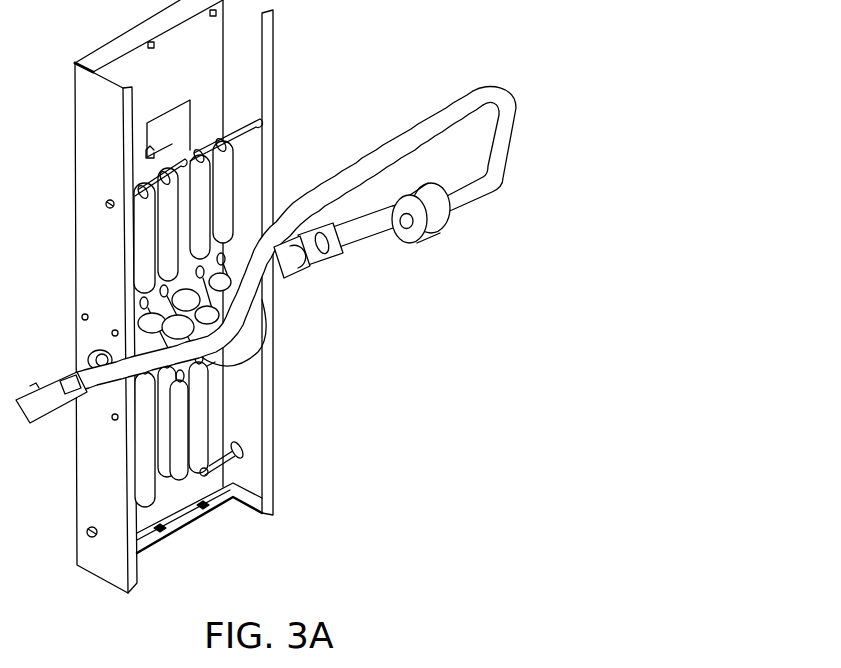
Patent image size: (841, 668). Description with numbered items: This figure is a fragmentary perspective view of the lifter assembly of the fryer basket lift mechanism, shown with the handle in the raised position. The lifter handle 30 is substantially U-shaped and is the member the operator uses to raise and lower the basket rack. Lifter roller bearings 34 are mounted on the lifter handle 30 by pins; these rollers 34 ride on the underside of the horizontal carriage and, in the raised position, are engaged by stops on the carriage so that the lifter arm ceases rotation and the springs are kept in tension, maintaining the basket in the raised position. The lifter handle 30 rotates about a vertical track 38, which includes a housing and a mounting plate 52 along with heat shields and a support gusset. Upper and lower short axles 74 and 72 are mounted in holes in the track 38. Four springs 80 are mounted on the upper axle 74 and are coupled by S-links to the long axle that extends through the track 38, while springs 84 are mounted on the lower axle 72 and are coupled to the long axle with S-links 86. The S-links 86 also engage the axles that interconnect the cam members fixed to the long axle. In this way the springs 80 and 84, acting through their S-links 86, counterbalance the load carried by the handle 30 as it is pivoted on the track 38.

The lifter handle 30 is at (481, 100).
The lifter roller bearing 34 is at (440, 218).
The vertical track 38 is at (272, 52).
The mounting plate 52 is at (292, 194).
The lower short axle 72 is at (240, 451).
The upper short axle 74 is at (258, 118).
The spring 80 is at (226, 183).
The spring 84 is at (204, 420).
The S-link 86 is at (230, 357).